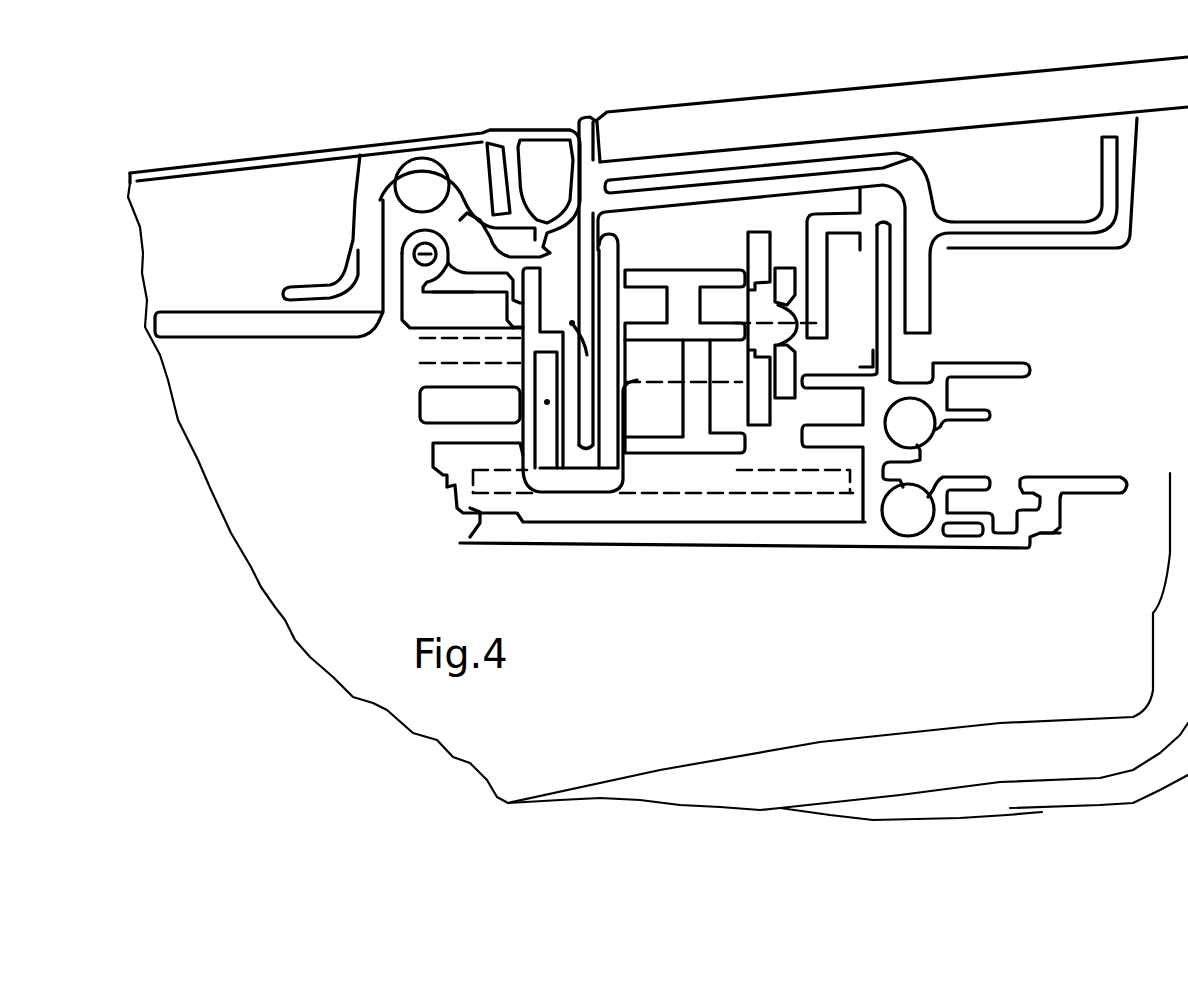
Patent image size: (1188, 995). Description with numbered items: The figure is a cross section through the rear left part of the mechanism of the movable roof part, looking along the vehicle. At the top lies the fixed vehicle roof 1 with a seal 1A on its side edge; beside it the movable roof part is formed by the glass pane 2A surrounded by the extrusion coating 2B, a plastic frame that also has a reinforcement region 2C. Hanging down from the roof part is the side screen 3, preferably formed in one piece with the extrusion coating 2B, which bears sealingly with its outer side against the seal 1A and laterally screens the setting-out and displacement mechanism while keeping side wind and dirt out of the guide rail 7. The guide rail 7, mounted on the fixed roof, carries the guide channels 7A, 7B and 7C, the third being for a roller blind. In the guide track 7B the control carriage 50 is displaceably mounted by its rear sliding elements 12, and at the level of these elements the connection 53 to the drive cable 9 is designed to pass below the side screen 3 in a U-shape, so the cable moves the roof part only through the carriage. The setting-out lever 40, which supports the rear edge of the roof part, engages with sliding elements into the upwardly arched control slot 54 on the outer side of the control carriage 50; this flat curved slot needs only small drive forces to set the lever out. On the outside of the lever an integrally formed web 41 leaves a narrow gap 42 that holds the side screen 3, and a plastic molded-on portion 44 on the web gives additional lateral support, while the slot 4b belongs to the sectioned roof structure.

The vehicle roof 1 is at (328, 153).
The seal 1A is at (540, 137).
The slot 4b is at (568, 122).
The glass pane 2A is at (913, 102).
The extrusion coating 2B is at (588, 118).
The reinforcement region 2C is at (1053, 222).
The side screen 3 is at (590, 275).
The drive cable 9 is at (420, 253).
The setting-out lever 40 is at (609, 253).
The control carriage 50 is at (673, 283).
The control slot 54 is at (660, 365).
The plastic molded-on portion 44 is at (533, 308).
The connection to drive cable 53 is at (472, 310).
The guide rail 7 is at (403, 400).
The first guide channel 7A is at (470, 537).
The second guide channel 7B is at (547, 402).
The third guide channel 7C is at (933, 463).
The rear sliding element 12 is at (553, 372).
The web 41 is at (420, 387).
The gap 42 is at (587, 355).